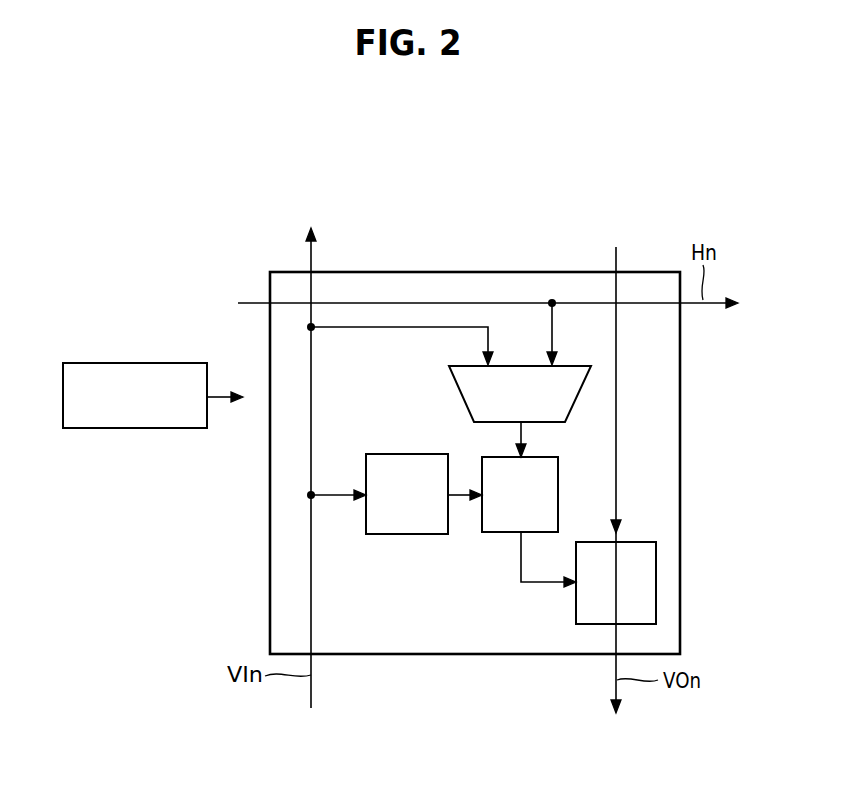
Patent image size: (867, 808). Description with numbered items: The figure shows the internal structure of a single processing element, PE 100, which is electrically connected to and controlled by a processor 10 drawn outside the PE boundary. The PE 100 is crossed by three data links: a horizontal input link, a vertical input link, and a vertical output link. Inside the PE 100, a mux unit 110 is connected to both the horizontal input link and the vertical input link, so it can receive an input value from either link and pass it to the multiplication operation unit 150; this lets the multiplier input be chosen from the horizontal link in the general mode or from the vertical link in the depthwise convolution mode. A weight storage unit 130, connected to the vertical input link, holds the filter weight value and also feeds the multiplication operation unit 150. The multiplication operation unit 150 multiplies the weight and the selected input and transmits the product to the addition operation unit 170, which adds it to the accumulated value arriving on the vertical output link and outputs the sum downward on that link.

The processor 10 is at (134, 363).
The PE 100 is at (549, 216).
The mux unit 110 is at (580, 393).
The weight storage unit 130 is at (366, 519).
The multiplication operation unit 150 is at (558, 493).
The addition operation unit 170 is at (656, 583).